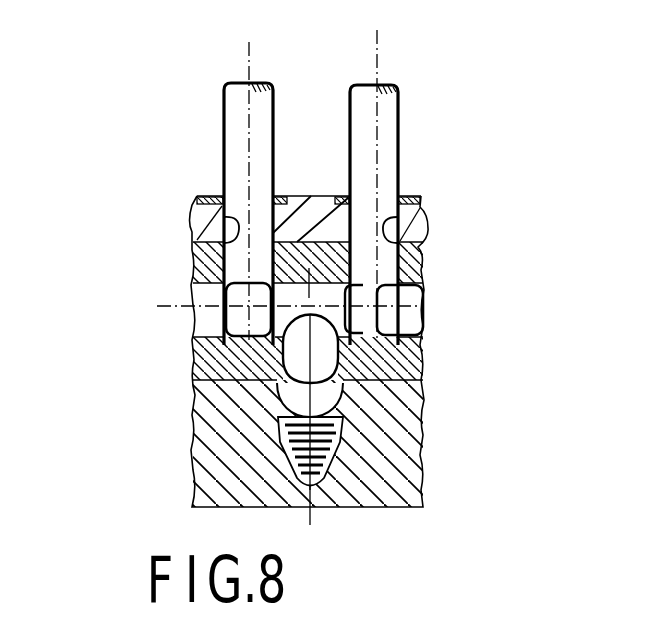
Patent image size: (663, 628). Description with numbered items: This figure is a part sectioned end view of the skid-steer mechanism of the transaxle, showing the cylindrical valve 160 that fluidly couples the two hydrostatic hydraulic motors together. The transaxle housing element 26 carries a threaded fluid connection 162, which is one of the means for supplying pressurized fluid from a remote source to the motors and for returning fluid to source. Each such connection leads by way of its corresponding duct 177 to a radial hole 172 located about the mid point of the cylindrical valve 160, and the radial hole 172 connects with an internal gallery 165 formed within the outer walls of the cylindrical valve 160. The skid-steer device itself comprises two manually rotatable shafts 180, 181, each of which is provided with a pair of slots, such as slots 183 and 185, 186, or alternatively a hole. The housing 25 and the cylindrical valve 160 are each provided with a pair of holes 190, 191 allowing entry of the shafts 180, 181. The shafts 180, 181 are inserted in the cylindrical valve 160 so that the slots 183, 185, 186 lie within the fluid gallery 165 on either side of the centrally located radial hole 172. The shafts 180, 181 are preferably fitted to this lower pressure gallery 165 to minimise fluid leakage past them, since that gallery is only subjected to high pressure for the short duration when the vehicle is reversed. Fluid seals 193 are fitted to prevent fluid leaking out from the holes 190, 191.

The transaxle housing element 26 is at (377, 495).
The housing 25 is at (293, 227).
The cylindrical valve 160 is at (298, 360).
The threaded fluid connection 162 is at (340, 445).
The internal gallery 165 is at (268, 268).
The radial hole 172 is at (300, 362).
The duct 177 is at (317, 400).
The manually rotatable shaft 180 is at (242, 122).
The manually rotatable shaft 181 is at (385, 132).
The slot 183 is at (228, 292).
The slot 185 is at (372, 289).
The slot 186 is at (405, 309).
The hole 190 is at (197, 196).
The hole 191 is at (421, 207).
The fluid seal 193 is at (344, 194).